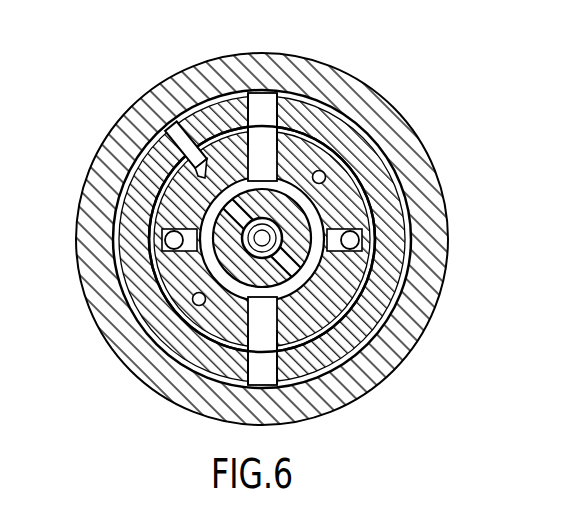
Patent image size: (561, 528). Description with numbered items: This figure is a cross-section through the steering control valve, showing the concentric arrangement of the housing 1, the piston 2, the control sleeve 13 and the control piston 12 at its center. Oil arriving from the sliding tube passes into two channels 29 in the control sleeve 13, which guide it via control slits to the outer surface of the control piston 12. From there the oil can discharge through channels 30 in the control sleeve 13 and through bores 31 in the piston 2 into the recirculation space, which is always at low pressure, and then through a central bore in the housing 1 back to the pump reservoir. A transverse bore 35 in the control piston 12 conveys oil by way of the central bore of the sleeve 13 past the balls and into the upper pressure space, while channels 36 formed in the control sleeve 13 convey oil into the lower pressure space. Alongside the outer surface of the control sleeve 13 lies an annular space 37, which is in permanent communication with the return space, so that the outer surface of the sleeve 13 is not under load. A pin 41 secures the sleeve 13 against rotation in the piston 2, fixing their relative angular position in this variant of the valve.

The housing 1 is at (94, 285).
The piston 2 is at (398, 270).
The control piston 12 is at (221, 228).
The control sleeve 13 is at (215, 330).
The channels 29 is at (164, 239).
The channels 30 is at (268, 128).
The bores 31 is at (253, 100).
The transverse bore 35 is at (360, 332).
The channels 36 is at (326, 177).
The annular space 37 is at (300, 273).
The pin 41 is at (166, 145).